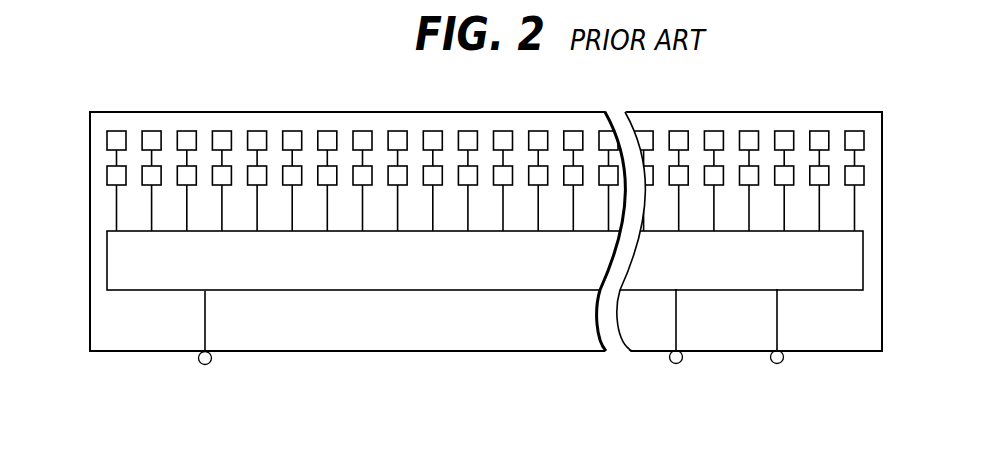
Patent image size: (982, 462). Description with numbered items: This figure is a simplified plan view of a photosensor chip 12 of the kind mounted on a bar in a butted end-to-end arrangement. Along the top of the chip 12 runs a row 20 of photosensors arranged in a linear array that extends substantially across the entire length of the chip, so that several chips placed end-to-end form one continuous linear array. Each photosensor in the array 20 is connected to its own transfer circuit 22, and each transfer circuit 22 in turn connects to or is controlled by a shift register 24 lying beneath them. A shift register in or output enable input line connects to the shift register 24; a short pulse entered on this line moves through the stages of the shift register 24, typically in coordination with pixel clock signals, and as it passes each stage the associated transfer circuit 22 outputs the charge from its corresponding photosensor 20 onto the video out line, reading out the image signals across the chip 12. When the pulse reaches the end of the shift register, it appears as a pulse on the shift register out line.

The chip 12 is at (180, 112).
The row of photosensors 20 is at (95, 141).
The transfer circuit 22 is at (94, 171).
The shift register 24 is at (107, 280).